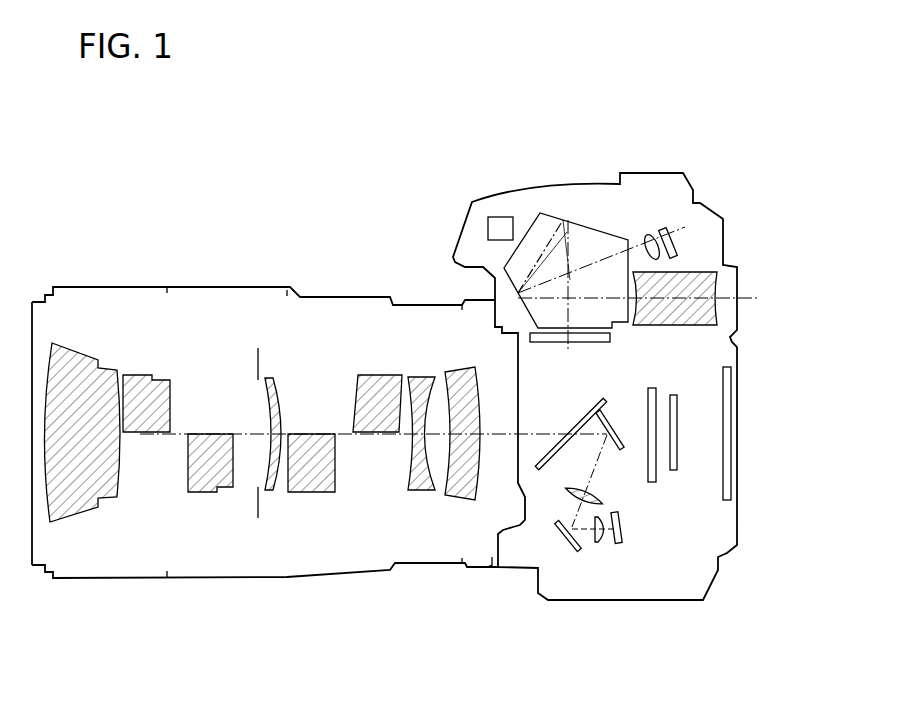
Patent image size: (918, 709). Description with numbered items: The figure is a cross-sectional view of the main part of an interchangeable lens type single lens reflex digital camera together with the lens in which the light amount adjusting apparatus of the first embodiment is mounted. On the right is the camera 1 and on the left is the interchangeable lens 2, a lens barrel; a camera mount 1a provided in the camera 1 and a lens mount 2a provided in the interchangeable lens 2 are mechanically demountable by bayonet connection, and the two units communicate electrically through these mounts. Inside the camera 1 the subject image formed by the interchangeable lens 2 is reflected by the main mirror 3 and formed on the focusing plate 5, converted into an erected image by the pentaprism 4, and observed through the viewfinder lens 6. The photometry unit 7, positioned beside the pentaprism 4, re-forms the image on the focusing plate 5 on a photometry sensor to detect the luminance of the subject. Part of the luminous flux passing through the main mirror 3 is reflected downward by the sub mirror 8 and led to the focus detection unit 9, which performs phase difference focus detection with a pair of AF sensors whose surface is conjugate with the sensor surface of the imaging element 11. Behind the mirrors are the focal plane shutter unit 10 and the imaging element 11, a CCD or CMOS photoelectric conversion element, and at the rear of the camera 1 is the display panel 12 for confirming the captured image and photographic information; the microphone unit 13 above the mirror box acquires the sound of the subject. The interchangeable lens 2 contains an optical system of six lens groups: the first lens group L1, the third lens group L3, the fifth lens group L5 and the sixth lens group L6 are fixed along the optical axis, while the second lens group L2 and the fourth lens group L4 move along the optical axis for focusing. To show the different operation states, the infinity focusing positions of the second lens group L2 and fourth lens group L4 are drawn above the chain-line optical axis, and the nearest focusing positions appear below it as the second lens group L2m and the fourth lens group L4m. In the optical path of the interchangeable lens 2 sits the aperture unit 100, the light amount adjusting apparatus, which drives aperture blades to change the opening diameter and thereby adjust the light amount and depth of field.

The camera 1 is at (650, 173).
The camera mount 1a is at (492, 668).
The interchangeable lens 2 is at (93, 580).
The lens mount 2a is at (504, 502).
The main mirror 3 is at (600, 400).
The pentaprism 4 is at (597, 228).
The focusing plate 5 is at (540, 348).
The viewfinder lens 6 is at (717, 283).
The photometry unit 7 is at (663, 228).
The sub mirror 8 is at (615, 450).
The focus detection unit 9 is at (595, 543).
The focal plane shutter unit 10 is at (653, 482).
The imaging element 11 is at (673, 470).
The display panel 12 is at (738, 408).
The microphone unit 13 is at (502, 217).
The aperture unit 100 is at (255, 516).
The first lens group L1 is at (84, 356).
The second lens group L2 is at (138, 375).
The second lens group in nearest focusing state L2m is at (200, 493).
The third lens group L3 is at (270, 378).
The fourth lens group L4 is at (375, 375).
The fourth lens group in nearest focusing state L4m is at (320, 493).
The fifth lens group L5 is at (423, 492).
The sixth lens group L6 is at (462, 500).